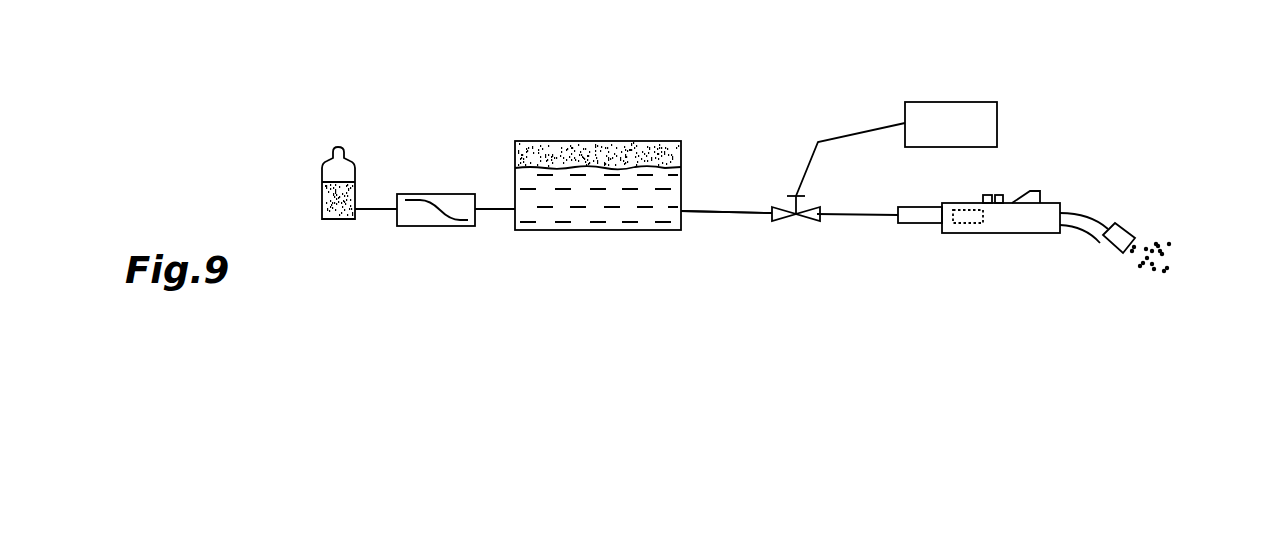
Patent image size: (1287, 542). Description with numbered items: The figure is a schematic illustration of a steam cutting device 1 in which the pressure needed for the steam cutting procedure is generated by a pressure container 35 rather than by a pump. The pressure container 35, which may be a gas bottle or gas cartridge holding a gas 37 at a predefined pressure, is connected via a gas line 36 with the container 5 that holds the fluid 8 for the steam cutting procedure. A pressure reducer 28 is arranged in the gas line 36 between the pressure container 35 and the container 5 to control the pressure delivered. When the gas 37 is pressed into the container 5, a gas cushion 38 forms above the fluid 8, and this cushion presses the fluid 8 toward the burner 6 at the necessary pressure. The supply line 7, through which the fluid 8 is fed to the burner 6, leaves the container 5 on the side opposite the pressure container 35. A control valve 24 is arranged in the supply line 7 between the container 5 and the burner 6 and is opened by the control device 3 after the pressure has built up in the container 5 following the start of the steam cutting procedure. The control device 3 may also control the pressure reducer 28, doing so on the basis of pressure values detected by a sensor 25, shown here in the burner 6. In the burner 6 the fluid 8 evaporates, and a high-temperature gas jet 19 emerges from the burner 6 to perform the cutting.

The steam cutting device 1 is at (433, 98).
The control device 3 is at (932, 125).
The container 5 is at (540, 260).
The burner 6 is at (985, 257).
The supply line 7 is at (737, 223).
The fluid 8 is at (595, 190).
The gas jet 19 is at (1165, 242).
The control valve 24 is at (780, 203).
The sensor 25 is at (963, 213).
The pressure reducer 28 is at (457, 205).
The pressure container 35 is at (320, 165).
The gas line 36 is at (368, 222).
The gas 37 is at (337, 205).
The gas cushion 38 is at (578, 152).